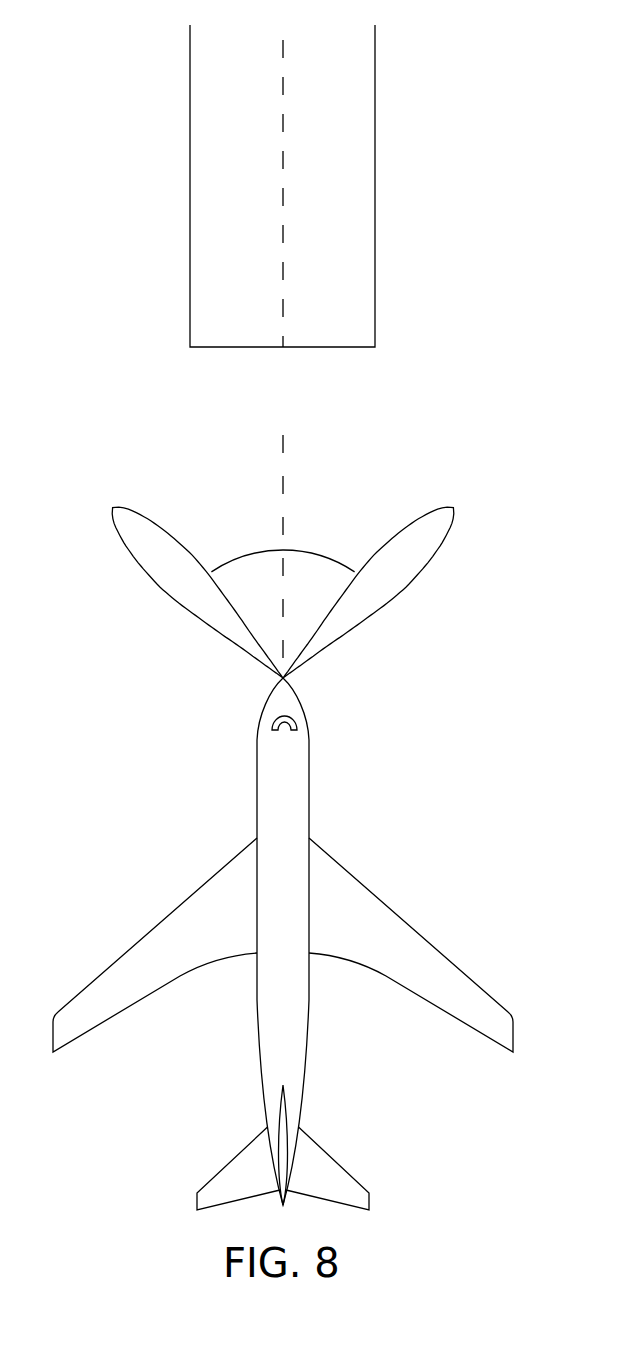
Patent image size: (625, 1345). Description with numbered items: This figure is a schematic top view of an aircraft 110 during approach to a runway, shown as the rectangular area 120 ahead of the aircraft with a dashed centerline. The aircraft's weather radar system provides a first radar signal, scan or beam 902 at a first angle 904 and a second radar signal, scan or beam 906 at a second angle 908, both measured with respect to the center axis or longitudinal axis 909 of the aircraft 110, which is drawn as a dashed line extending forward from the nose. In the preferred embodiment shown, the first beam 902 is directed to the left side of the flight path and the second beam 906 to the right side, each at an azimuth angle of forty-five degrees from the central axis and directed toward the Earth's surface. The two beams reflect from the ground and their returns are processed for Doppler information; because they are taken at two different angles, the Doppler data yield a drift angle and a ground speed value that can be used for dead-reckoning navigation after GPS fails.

The aircraft 110 is at (292, 1033).
The runway 120 is at (363, 87).
The first radar signal, scan or beam 902 is at (128, 527).
The first angle 904 is at (247, 551).
The second radar signal, scan or beam 906 is at (440, 527).
The second angle 908 is at (319, 550).
The center axis or longitudinal axis 909 is at (283, 463).